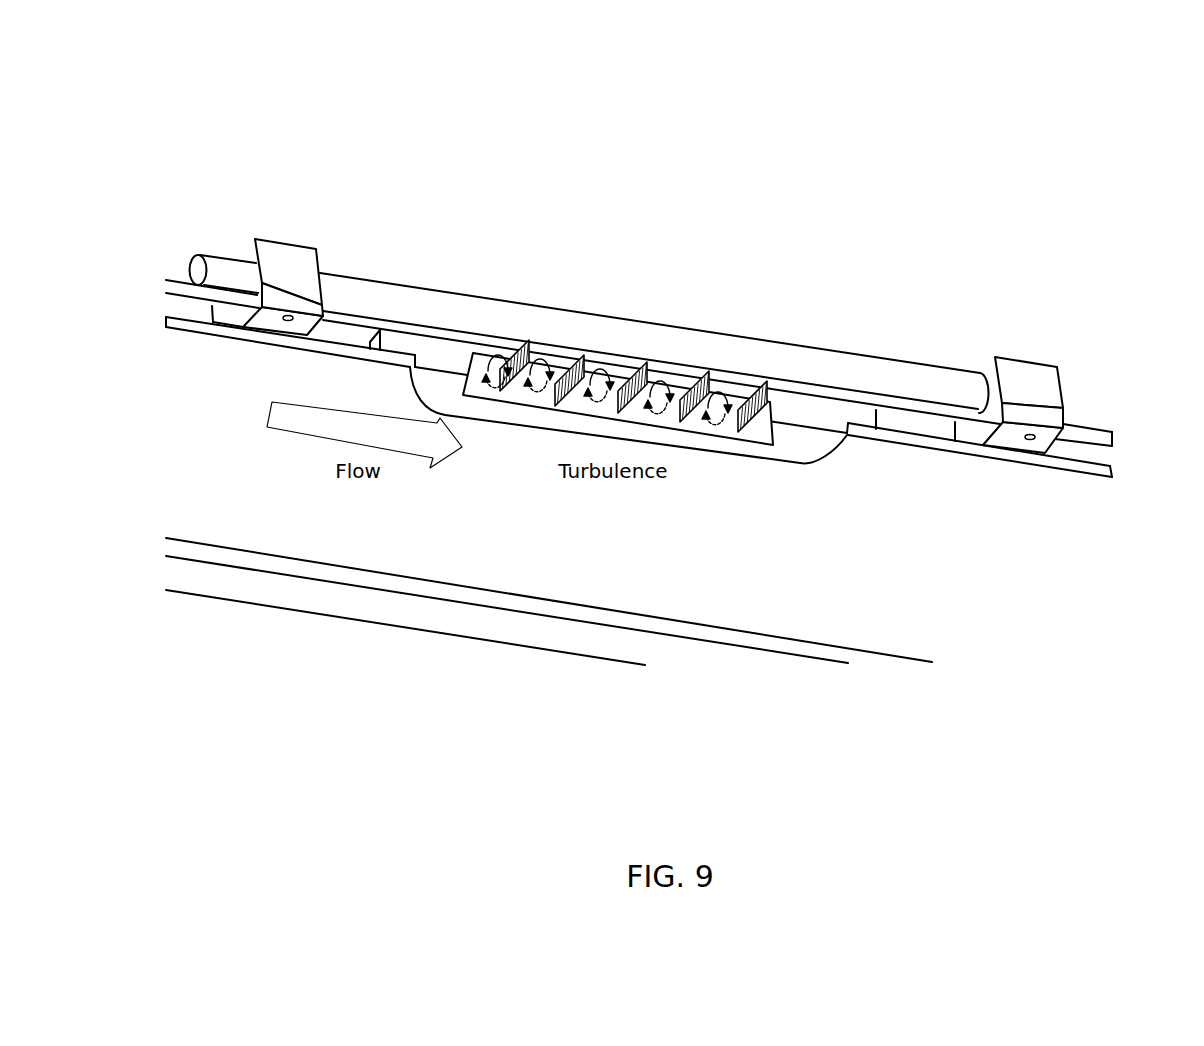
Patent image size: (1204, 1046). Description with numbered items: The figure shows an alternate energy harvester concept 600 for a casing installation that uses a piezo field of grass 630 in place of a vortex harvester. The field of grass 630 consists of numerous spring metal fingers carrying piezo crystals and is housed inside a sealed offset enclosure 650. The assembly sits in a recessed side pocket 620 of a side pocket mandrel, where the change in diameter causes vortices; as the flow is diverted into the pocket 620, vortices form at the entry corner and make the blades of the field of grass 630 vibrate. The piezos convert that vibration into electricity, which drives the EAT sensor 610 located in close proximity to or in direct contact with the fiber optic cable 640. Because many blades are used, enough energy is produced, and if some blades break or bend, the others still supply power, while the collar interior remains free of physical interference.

The turbulence generating assembly 600 is at (652, 183).
The EAT sensor 610 is at (360, 277).
The recessed side pocket 620 is at (488, 350).
The piezo field of grass 630 is at (523, 343).
The fiber optic cable 640 is at (1090, 428).
The sealed offset enclosure 650 is at (738, 456).